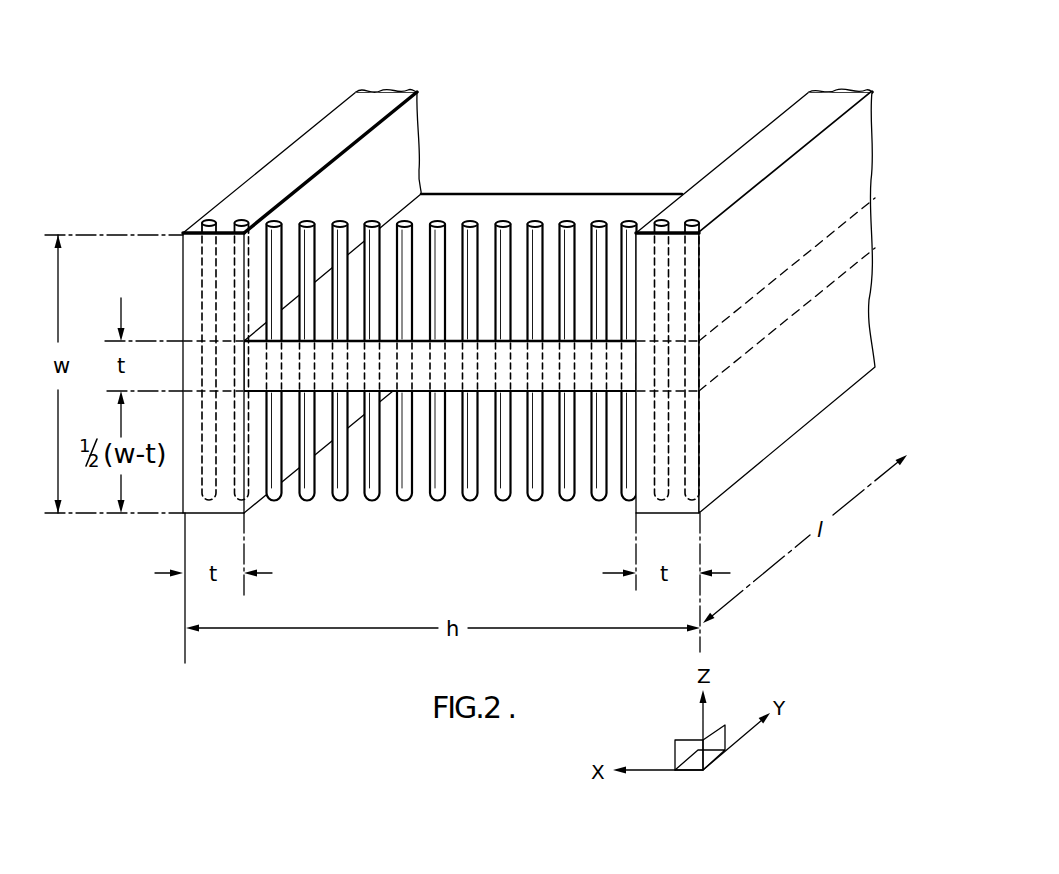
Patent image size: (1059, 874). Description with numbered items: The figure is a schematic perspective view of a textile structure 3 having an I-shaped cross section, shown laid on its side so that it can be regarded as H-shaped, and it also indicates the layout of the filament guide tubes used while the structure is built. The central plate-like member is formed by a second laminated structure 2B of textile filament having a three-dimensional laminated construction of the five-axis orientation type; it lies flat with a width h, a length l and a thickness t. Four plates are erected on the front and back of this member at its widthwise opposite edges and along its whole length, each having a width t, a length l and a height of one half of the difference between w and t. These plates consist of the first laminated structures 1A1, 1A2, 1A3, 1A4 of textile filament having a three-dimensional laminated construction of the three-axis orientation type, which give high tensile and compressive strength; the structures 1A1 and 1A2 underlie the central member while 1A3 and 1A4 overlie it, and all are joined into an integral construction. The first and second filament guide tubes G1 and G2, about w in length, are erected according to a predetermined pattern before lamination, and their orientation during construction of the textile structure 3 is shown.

The first laminated structure 1A1 is at (258, 490).
The first laminated structure 1A2 is at (730, 463).
The first laminated structure 1A3 is at (254, 190).
The first laminated structure 1A4 is at (716, 186).
The second laminated structure 2B is at (440, 336).
The textile structure 3 is at (524, 304).
The first filament guide tube G1 is at (210, 222).
The second filament guide tube G2 is at (437, 222).